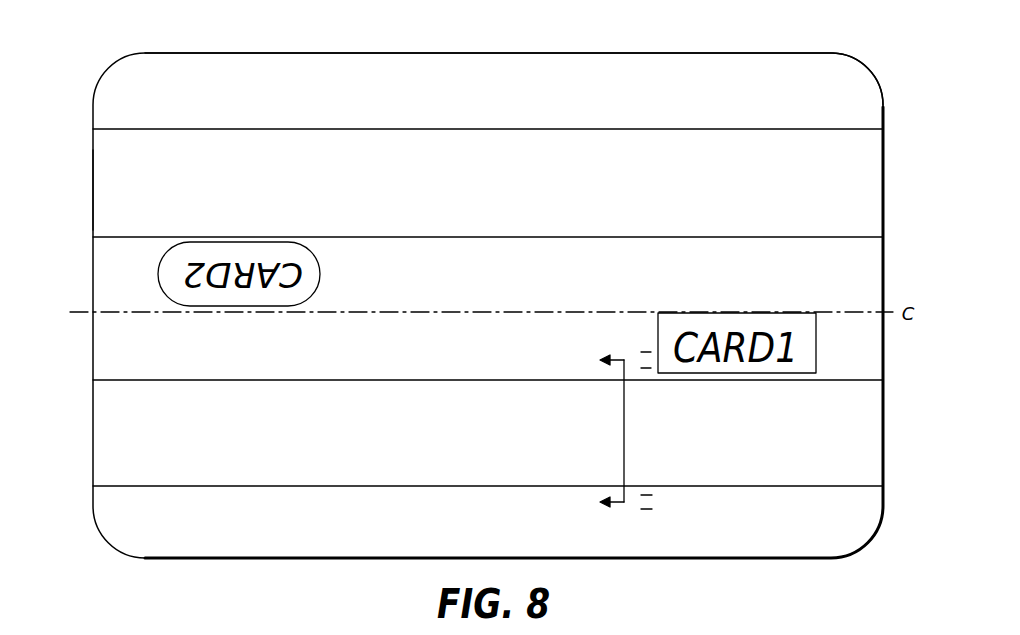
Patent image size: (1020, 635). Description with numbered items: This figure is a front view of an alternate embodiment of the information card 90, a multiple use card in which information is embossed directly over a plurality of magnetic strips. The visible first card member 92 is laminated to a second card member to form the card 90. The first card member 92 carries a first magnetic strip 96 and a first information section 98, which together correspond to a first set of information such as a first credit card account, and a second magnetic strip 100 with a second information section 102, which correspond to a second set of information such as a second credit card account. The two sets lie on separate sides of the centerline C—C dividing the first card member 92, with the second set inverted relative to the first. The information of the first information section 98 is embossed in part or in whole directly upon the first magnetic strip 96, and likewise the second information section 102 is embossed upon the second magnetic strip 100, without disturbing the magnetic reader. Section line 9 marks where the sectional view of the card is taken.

The information card 90 is at (881, 80).
The first card member 92 is at (103, 78).
The first magnetic strip 96 is at (862, 407).
The first information section 98 is at (142, 380).
The second magnetic strip 100 is at (112, 189).
The second information section 102 is at (835, 82).
The section line 9- 9 is at (628, 433).